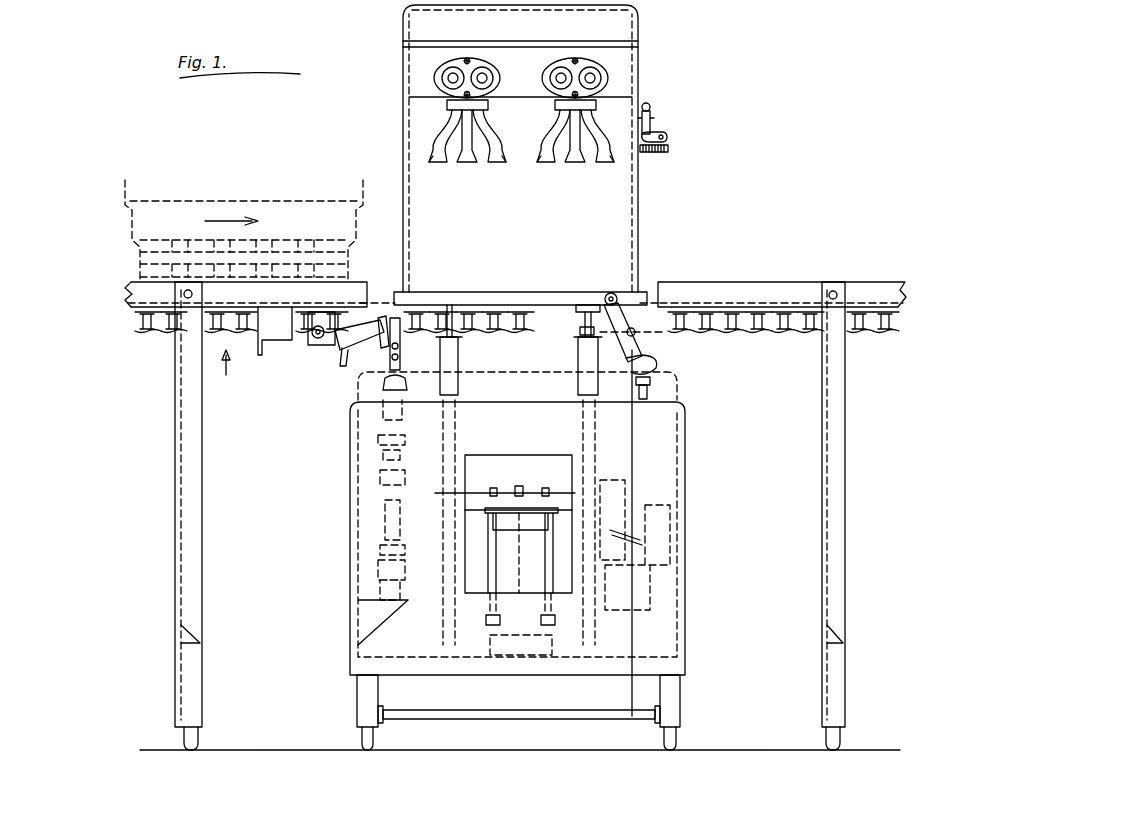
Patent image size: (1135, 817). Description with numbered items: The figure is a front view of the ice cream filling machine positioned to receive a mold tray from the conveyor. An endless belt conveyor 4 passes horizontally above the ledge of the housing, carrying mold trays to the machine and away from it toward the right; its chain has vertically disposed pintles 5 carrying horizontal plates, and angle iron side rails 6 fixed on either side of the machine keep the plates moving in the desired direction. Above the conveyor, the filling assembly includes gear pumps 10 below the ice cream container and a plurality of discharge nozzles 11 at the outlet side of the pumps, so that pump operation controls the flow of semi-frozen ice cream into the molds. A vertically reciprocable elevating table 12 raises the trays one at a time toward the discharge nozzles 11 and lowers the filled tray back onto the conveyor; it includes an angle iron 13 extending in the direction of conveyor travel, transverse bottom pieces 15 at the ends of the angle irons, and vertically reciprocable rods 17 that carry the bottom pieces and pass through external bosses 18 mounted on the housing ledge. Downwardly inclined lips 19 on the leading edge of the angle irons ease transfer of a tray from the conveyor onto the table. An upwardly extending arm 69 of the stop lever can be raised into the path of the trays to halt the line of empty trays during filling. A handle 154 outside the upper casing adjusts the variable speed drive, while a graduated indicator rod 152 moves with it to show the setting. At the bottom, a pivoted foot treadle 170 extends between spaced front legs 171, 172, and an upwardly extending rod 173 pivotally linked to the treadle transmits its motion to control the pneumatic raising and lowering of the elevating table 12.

The endless belt conveyor 4 is at (226, 375).
The pintles 5 is at (745, 322).
The angle iron side rails 6 is at (350, 297).
The gear pumps 10 is at (434, 80).
The discharge nozzles 11 is at (432, 142).
The elevating table 12 is at (640, 296).
The angle iron 13 is at (590, 292).
The bottom pieces 15 is at (447, 320).
The vertically reciprocable rods 17 is at (580, 330).
The external bosses 18 is at (460, 364).
The downwardly inclined lower horizontal lips 19 is at (395, 312).
The upwardly extending arm 69 is at (372, 332).
The indicator rod 152 is at (662, 152).
The handle 154 is at (660, 135).
The foot treadle 170 is at (490, 718).
The front leg 171 is at (360, 698).
The front leg 172 is at (680, 696).
The upwardly extending rod 173 is at (648, 645).